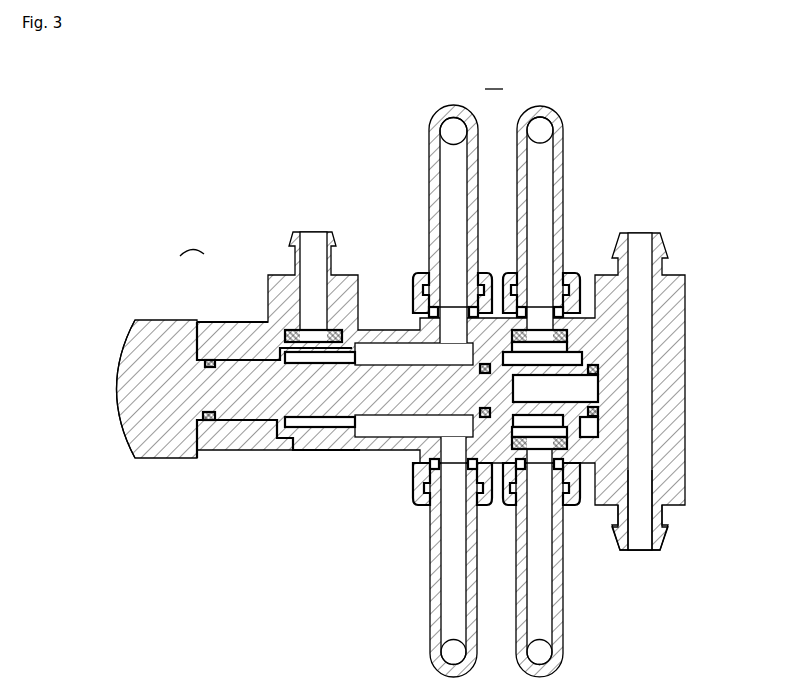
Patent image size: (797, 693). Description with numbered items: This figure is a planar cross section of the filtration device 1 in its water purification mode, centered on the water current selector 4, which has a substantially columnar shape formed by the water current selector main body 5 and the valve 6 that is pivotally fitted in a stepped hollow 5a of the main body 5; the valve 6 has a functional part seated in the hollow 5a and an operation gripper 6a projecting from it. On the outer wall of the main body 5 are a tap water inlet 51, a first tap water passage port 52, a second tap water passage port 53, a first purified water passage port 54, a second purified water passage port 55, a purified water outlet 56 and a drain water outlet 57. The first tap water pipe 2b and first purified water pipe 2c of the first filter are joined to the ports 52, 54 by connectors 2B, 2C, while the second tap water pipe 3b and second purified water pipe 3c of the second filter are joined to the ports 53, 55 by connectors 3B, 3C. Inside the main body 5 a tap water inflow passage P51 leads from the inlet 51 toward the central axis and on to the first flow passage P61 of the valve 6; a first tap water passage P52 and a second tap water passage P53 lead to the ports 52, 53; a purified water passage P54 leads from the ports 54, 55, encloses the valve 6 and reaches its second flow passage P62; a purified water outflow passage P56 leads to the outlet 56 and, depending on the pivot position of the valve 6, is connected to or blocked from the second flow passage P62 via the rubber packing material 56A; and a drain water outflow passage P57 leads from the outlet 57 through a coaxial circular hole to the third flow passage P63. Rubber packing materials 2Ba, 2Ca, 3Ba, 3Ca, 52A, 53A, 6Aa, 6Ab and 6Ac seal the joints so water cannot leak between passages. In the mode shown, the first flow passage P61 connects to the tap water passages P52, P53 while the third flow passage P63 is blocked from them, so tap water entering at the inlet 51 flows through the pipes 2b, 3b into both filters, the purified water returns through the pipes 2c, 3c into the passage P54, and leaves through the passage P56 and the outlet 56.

The fluid connection device 1 is at (494, 80).
The first tap water pipe 2b is at (561, 153).
The first purified water pipe 2c is at (433, 140).
The connector 2B is at (568, 275).
The connector 2C is at (415, 278).
The rubber packing material 2Ba is at (513, 306).
The rubber packing material 2Ca is at (467, 310).
The second tap water pipe 3b is at (564, 642).
The second purified water pipe 3c is at (432, 593).
The connector 3B is at (568, 494).
The connector 3C is at (420, 494).
The rubber packing material 3Ba is at (513, 476).
The rubber packing material 3Ca is at (467, 465).
The water current selector 4 is at (191, 245).
The water current selector main body 5 is at (240, 365).
The stepped hollow 5a is at (258, 330).
The valve 6 is at (228, 378).
The operation gripper 6a is at (166, 447).
The rubber packing material 6Aa is at (600, 408).
The rubber packing material 6Ab is at (473, 404).
The rubber packing material 6Ac is at (210, 420).
The tap water inlet 51 is at (638, 229).
The first tap water passage port 52 is at (558, 300).
The rubber packing material 52A is at (520, 333).
The second tap water passage port 53 is at (558, 480).
The rubber packing material 53A is at (565, 449).
The first purified water passage port 54 is at (452, 308).
The second purified water passage port 55 is at (452, 468).
The purified water outlet 56 is at (312, 228).
The rubber packing material 56A is at (294, 332).
The drain water outlet 57 is at (643, 553).
The tap water inflow passage P51 is at (645, 265).
The first tap water passage P52 is at (543, 308).
The second tap water passage P53 is at (543, 470).
The purified water passage P54 is at (413, 353).
The purified water outflow passage P56 is at (310, 262).
The drain water outflow passage P57 is at (642, 490).
The first flow passage P61 is at (540, 360).
The second flow passage P62 is at (305, 428).
The third flow passage P63 is at (580, 388).